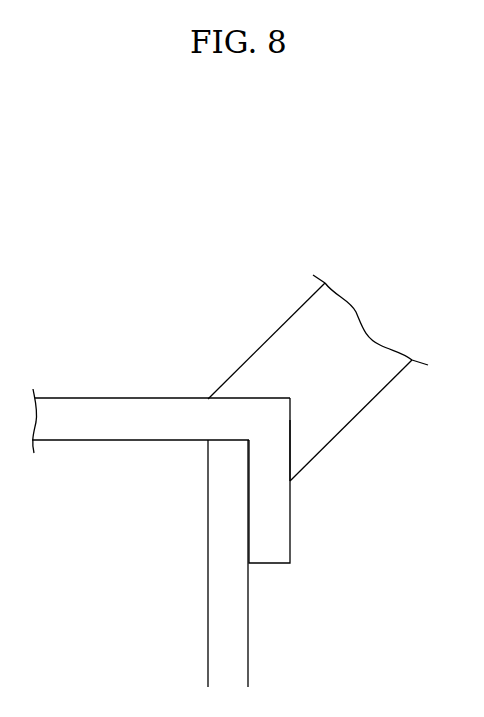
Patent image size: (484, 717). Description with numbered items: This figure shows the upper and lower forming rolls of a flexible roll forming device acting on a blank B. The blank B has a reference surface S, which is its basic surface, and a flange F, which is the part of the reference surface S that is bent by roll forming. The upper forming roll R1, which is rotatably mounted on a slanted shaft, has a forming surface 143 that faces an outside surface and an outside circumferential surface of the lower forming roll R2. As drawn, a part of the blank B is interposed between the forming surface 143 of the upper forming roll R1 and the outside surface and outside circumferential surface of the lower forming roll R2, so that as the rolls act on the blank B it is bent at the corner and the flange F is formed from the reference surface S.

The blank B is at (72, 447).
The reference surface S is at (130, 440).
The flange F is at (291, 527).
The upper forming roll R1 is at (382, 392).
The lower forming roll R2 is at (208, 595).
The forming surface 143 is at (290, 433).